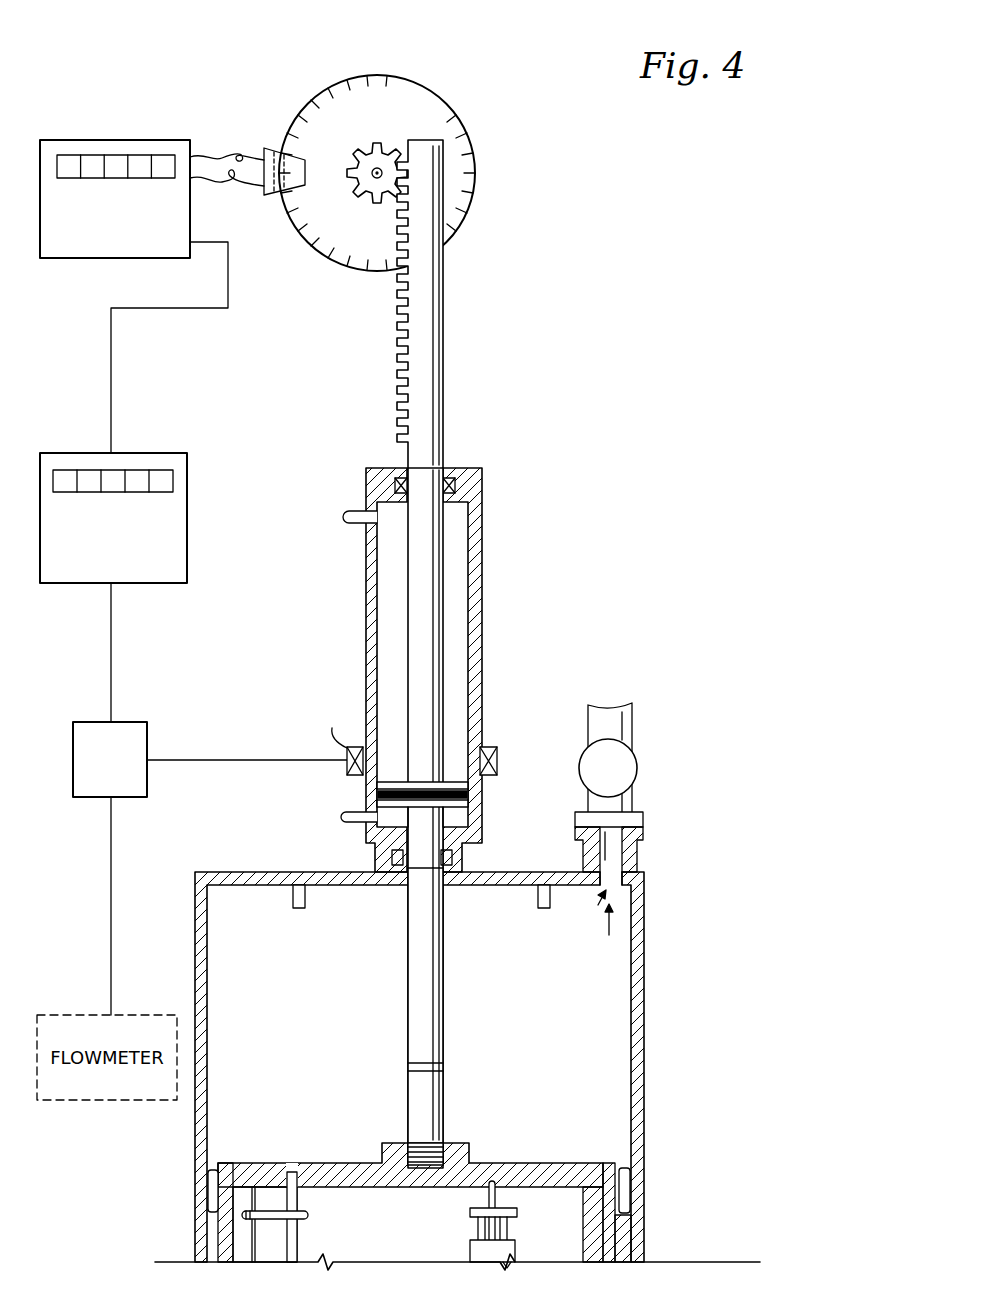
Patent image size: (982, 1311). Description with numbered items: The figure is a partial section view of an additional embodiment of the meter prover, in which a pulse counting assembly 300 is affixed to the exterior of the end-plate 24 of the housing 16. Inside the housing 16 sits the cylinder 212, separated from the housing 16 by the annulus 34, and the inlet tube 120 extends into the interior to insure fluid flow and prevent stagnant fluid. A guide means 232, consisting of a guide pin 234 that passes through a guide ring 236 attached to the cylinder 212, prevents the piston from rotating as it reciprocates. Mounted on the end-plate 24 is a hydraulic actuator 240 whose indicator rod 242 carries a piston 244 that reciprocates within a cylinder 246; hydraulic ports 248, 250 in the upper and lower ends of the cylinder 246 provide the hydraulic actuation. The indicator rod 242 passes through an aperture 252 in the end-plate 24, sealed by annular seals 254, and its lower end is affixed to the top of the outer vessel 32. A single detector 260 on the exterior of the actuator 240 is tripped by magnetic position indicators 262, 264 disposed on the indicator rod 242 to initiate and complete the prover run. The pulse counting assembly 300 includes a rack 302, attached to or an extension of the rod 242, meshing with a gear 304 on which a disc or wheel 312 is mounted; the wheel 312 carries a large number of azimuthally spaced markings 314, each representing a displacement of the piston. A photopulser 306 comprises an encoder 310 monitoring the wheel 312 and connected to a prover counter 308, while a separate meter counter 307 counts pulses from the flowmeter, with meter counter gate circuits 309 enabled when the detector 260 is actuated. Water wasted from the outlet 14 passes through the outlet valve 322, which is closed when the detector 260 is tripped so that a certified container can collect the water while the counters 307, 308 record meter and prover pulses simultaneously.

The downstream outlet 14 is at (610, 853).
The housing 16 is at (637, 963).
The end-plate 24 is at (217, 872).
The outer vessel 32 is at (607, 1253).
The annulus 34 is at (212, 1232).
The inlet tube 120 is at (468, 1250).
The cylinder 212 is at (602, 1230).
The guide means 232 is at (302, 1205).
The guide pin 234 is at (298, 1241).
The guide ring 236 is at (310, 1215).
The hydraulic actuator 240 is at (409, 816).
The indicator rod 242 is at (428, 594).
The piston 244 is at (457, 770).
The cylinder 246 is at (366, 545).
The hydraulic port 248 is at (352, 510).
The hydraulic port 250 is at (350, 814).
The aperture 252 is at (408, 883).
The annular seals 254 is at (455, 860).
The detector 260 is at (347, 752).
The magnetic position indicator 262 is at (437, 817).
The magnetic position indicator 264 is at (428, 1071).
The pulse counting assembly 300 is at (394, 243).
The rack 302 is at (432, 362).
The gear 304 is at (365, 183).
The photopulser 306 is at (262, 200).
The meter counter 307 is at (188, 476).
The prover counter 308 is at (120, 140).
The meter counter gate circuits 309 is at (147, 722).
The encoder 310 is at (263, 148).
The disc or wheel 312 is at (345, 97).
The markings 314 is at (323, 94).
The outlet valve 322 is at (638, 763).